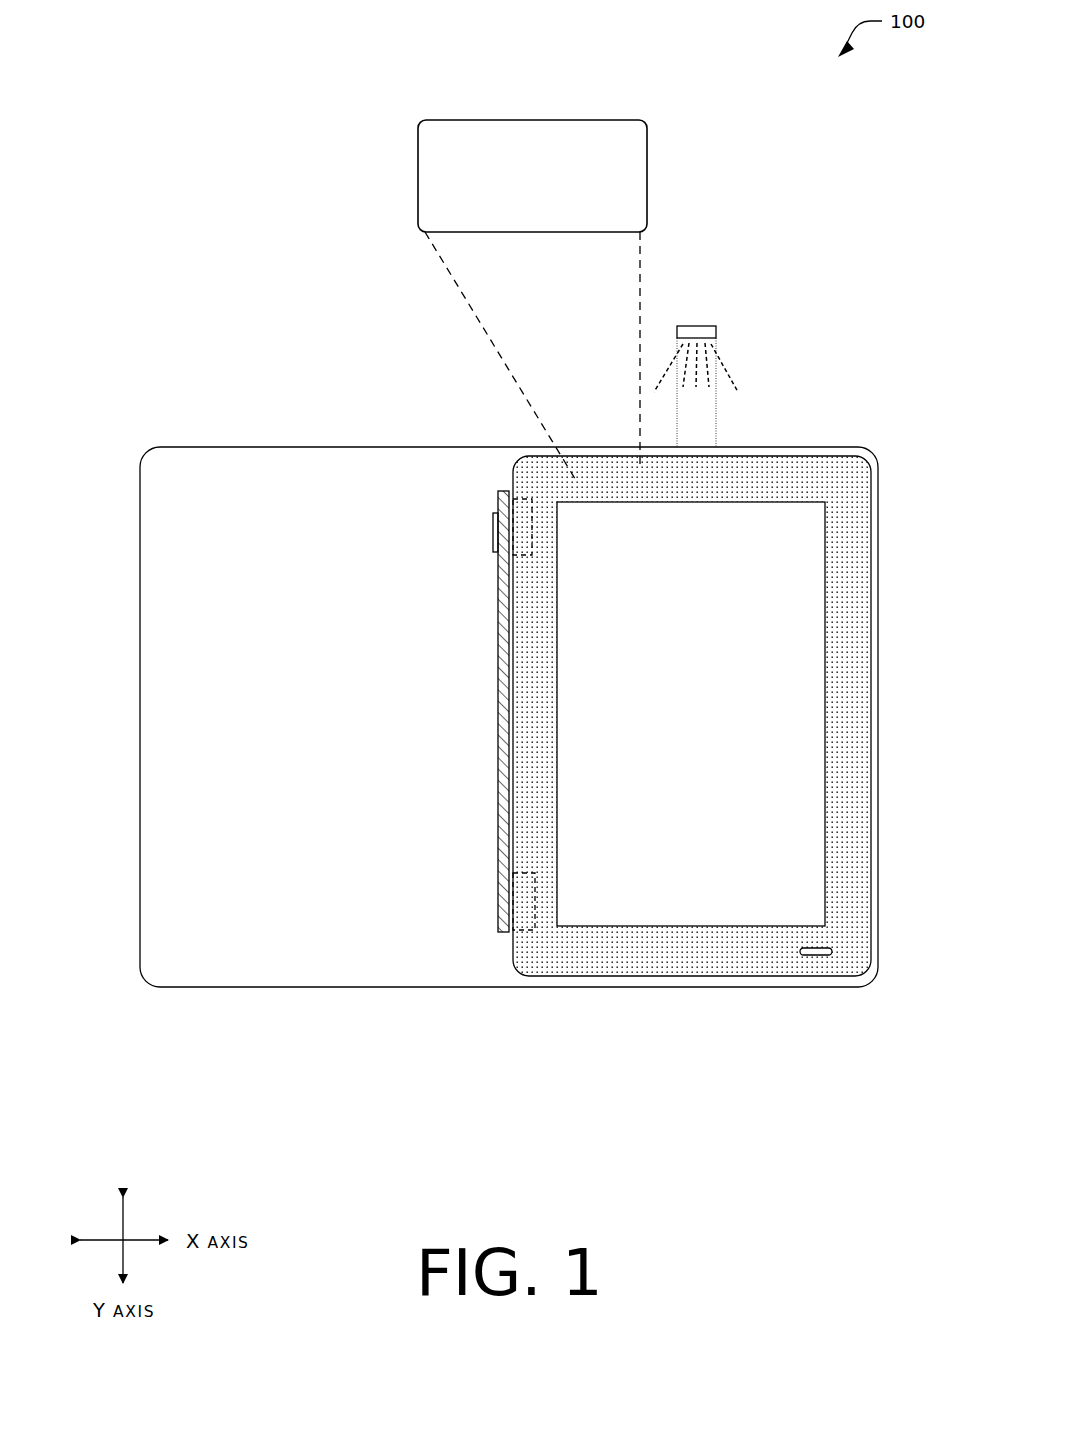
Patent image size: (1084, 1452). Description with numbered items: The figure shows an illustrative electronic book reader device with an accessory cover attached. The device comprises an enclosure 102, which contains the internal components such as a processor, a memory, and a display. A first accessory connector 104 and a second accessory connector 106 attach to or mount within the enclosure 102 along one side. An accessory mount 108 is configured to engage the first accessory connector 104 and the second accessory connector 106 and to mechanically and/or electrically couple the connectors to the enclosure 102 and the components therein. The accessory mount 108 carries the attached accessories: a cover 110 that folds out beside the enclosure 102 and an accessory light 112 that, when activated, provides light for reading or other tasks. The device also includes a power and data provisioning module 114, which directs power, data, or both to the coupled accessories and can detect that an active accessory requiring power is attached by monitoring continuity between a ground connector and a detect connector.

The enclosure 102 is at (763, 480).
The first accessory connector 104 is at (515, 500).
The second accessory connector 106 is at (535, 930).
The accessory mount 108 is at (503, 690).
The cover 110 is at (248, 515).
The accessory light 112 is at (700, 326).
The power and data provisioning module 114 is at (532, 301).